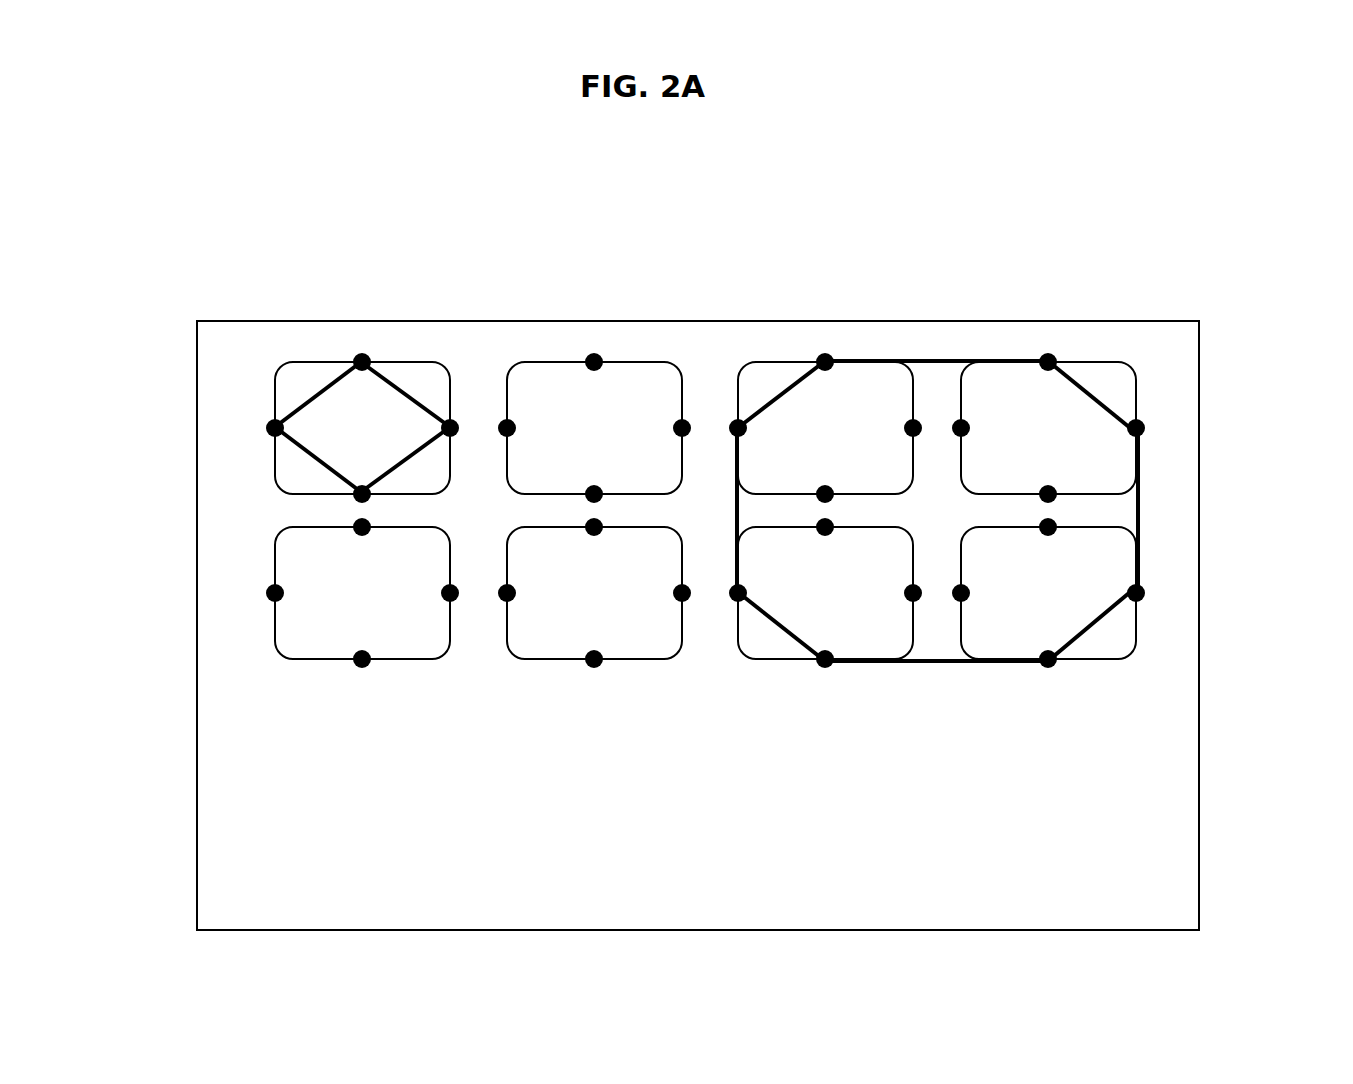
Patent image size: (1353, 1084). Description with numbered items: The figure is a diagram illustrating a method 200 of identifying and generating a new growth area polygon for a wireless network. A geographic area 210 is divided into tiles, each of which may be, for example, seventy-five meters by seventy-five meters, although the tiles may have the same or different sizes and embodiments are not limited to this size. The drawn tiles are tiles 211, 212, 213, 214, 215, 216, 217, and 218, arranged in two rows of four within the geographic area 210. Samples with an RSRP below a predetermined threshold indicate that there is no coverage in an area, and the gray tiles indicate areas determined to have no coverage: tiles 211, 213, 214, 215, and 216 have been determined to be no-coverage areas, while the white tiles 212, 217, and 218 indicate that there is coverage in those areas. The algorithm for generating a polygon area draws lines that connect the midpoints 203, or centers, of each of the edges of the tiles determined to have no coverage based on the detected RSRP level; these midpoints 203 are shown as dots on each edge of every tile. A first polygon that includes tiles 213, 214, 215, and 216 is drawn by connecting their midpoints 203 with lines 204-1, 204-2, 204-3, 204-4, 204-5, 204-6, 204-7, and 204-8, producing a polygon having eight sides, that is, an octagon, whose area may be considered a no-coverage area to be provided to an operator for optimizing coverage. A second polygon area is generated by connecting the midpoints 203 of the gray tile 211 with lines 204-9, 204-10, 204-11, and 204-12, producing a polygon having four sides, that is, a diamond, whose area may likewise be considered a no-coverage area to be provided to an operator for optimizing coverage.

The method 200 is at (440, 208).
The midpoints 203 is at (363, 360).
The line 204-1 is at (943, 361).
The line 204-2 is at (1073, 363).
The line 204-3 is at (1138, 506).
The line 204-4 is at (1087, 630).
The line 204-5 is at (946, 662).
The line 204-6 is at (776, 628).
The line 204-7 is at (736, 518).
The line 204-8 is at (770, 403).
The line 204-9 is at (420, 403).
The line 204-10 is at (403, 461).
The line 204-11 is at (298, 445).
The line 204-12 is at (307, 405).
The geographic area 210 is at (1200, 722).
The tile 211 is at (284, 362).
The tile 212 is at (652, 362).
The tile 213 is at (803, 363).
The tile 214 is at (1092, 397).
The tile 215 is at (1138, 623).
The tile 216 is at (806, 655).
The tile 217 is at (516, 659).
The tile 218 is at (273, 630).